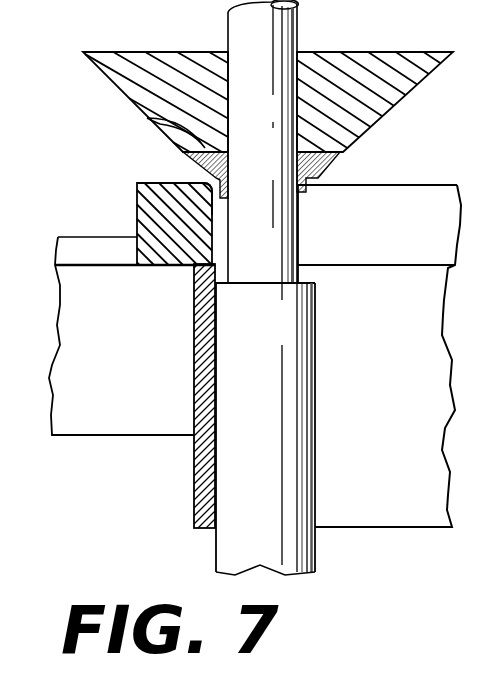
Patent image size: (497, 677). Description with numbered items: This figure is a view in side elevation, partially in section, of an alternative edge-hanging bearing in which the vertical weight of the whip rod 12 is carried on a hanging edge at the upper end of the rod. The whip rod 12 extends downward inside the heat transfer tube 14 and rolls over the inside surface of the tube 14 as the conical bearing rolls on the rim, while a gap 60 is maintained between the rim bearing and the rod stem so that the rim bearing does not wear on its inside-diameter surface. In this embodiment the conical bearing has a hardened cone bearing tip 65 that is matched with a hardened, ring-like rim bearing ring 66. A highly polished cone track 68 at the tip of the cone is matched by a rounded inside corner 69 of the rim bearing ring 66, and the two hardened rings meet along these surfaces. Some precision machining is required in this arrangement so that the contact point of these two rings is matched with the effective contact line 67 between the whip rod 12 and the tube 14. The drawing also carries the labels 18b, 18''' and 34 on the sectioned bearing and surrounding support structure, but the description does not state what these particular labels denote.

The whip rod 12 is at (316, 491).
The heat transfer tube 14 is at (194, 478).
The conical member half 18b is at (101, 72).
The conical member 18''' is at (472, 665).
The support body 34 is at (134, 374).
The gap 60 is at (213, 240).
The hardened cone bearing tip 65 is at (147, 118).
The rim bearing ring 66 is at (147, 190).
The effective contact line 67 is at (224, 440).
The cone track 68 is at (220, 172).
The rounded inside corner 69 is at (207, 190).